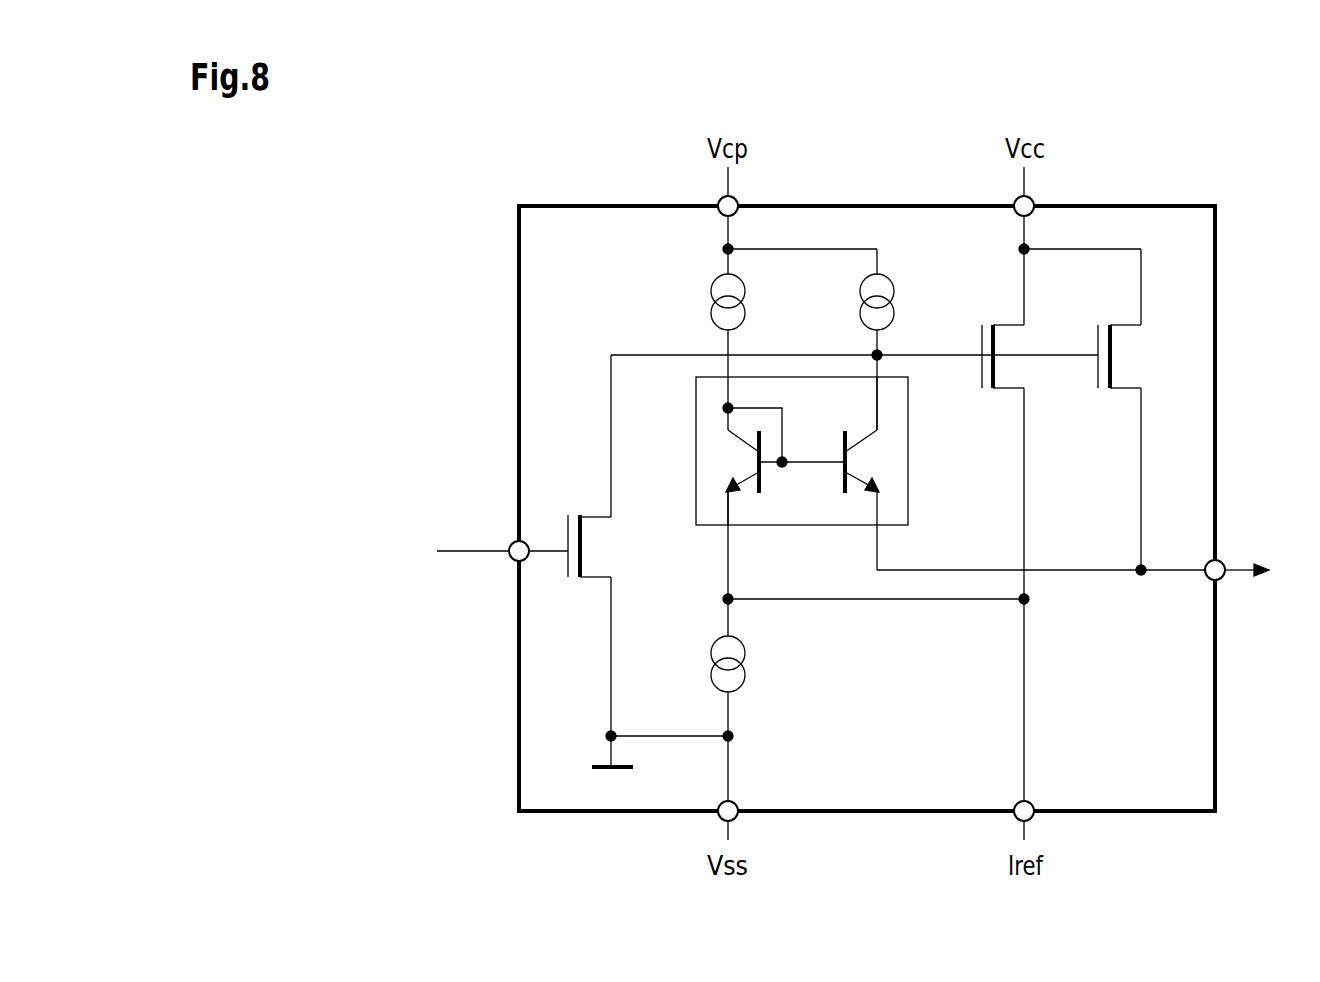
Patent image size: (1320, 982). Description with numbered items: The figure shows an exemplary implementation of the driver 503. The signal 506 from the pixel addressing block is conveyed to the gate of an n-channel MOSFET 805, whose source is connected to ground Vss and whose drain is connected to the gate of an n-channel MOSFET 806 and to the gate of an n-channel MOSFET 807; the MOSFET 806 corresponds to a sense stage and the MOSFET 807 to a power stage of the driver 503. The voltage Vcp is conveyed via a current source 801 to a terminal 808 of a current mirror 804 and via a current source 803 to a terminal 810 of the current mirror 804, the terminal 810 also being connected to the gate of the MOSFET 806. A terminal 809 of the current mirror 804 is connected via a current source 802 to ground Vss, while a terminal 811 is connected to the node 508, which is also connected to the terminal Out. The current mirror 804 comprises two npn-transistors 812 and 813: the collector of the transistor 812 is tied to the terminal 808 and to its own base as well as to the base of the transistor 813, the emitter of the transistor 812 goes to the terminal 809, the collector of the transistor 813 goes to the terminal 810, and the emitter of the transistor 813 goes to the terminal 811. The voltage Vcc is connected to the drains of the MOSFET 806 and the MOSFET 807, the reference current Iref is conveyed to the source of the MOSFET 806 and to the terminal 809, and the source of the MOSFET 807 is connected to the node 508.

The driver 503 is at (519, 305).
The signal 506 is at (500, 540).
The node 508 is at (1075, 568).
The current source 801 is at (704, 302).
The current source 802 is at (753, 664).
The current source 803 is at (853, 302).
The current mirror 804 is at (909, 438).
The n-channel MOSFET 805 is at (599, 546).
The n-channel MOSFET 806 is at (991, 337).
The n-channel MOSFET 807 is at (1128, 356).
The terminal 808 is at (755, 423).
The terminal 809 is at (744, 502).
The terminal 810 is at (859, 403).
The terminal 811 is at (860, 524).
The npn-transistor 812 is at (776, 461).
The npn-transistor 813 is at (868, 461).